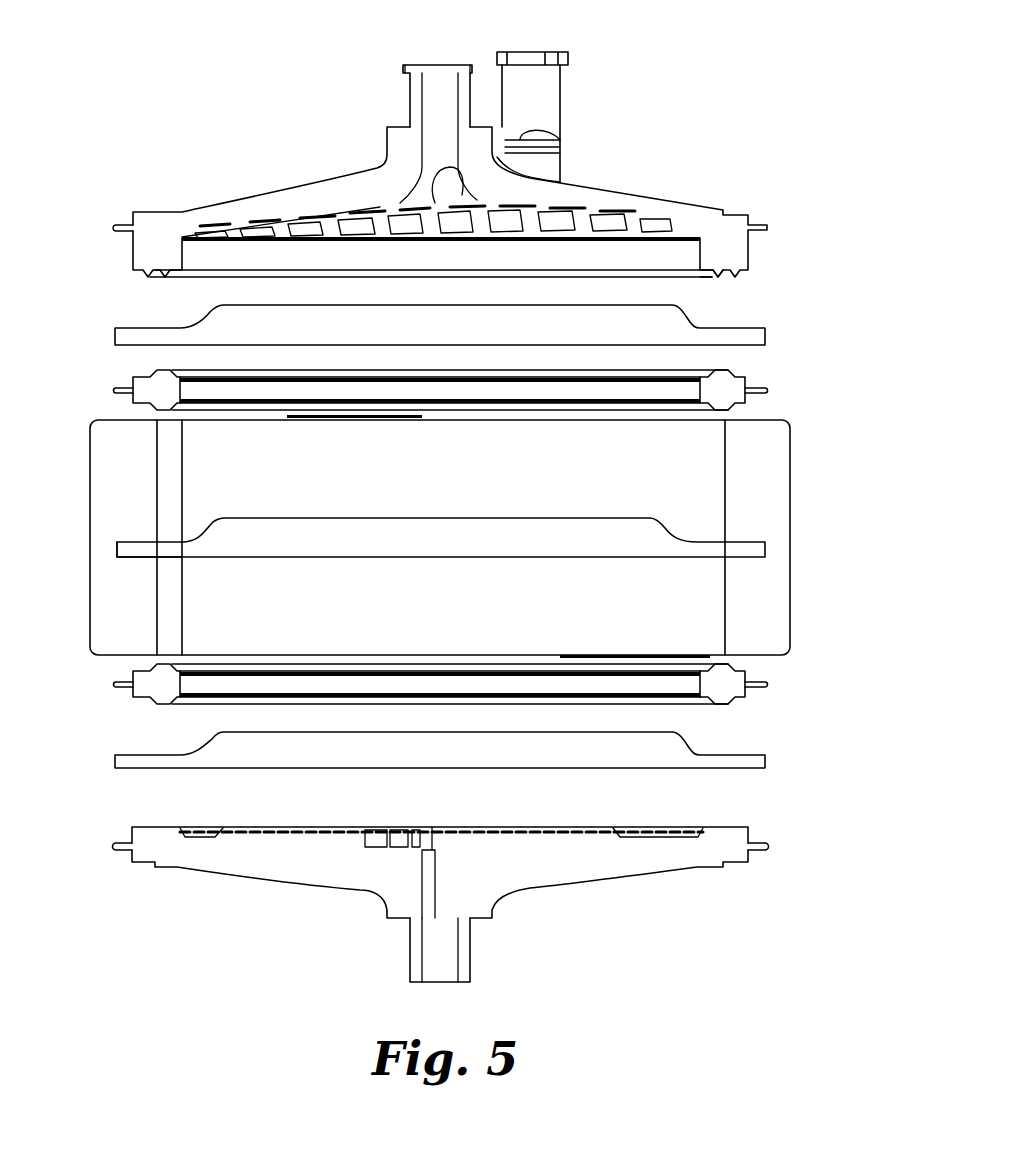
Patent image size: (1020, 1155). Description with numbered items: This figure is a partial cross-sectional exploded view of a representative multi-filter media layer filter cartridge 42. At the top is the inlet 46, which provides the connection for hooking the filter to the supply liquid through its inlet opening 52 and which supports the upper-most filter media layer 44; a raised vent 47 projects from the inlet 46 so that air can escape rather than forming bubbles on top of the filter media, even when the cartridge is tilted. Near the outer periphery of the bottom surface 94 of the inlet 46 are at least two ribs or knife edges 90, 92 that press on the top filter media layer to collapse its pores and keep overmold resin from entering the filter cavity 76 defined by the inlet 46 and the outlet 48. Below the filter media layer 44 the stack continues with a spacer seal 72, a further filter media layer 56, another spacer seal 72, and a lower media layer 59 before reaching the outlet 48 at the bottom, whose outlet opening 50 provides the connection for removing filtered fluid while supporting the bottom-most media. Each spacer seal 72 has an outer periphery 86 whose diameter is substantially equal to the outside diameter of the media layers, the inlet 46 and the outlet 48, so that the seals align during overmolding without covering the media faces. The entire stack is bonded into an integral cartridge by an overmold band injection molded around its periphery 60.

The multi-filter media layer filter cartridge 42 is at (668, 90).
The filter media layer 44 is at (220, 322).
The inlet 46 is at (272, 188).
The raised vent 47 is at (537, 90).
The outlet 48 is at (520, 872).
The outlet opening 50 is at (445, 953).
The inlet opening 52 is at (443, 78).
The filter media layer 56 is at (238, 535).
The lower plate 59 is at (150, 762).
The periphery 60 is at (108, 545).
The spacer seal 72 is at (740, 388).
The filter cavity 76 is at (680, 611).
The outer periphery 86 is at (118, 390).
The rib/knife edge 90 is at (730, 277).
The rib/knife edge 92 is at (713, 277).
The bottom surface 94 is at (740, 270).